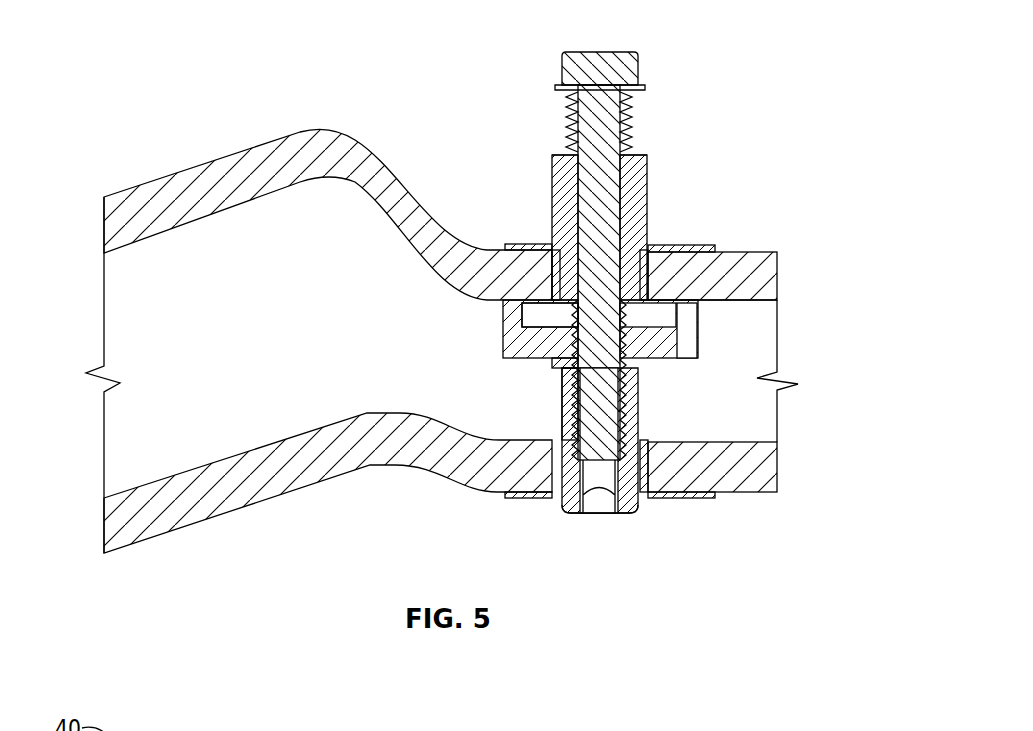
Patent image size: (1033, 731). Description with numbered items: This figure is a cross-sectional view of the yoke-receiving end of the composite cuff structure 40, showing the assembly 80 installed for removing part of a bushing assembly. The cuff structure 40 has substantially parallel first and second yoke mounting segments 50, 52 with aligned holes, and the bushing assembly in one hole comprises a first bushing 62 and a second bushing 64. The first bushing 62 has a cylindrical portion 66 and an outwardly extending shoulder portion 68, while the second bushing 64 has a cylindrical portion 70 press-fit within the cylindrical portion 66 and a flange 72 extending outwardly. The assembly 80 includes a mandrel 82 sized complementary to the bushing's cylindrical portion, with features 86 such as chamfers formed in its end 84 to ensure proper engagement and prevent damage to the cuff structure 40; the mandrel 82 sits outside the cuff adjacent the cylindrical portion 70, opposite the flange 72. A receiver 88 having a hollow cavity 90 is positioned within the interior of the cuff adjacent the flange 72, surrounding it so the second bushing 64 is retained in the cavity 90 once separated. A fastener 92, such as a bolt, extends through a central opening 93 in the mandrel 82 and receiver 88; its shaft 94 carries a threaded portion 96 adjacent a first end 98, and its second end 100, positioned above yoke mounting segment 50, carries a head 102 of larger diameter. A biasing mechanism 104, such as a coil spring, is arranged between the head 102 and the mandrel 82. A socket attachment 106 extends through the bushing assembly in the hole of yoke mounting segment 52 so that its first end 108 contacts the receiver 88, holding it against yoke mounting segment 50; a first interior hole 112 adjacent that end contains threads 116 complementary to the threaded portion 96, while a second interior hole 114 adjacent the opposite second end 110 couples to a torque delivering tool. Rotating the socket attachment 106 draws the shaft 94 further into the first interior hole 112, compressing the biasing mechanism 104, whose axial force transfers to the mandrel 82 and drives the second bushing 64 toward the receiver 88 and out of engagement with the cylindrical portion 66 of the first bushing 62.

The composite cuff structure 40 is at (108, 104).
The first yoke mounting segment 50 is at (385, 160).
The second yoke mounting segment 52 is at (346, 422).
The first bushing 62 is at (543, 240).
The second bushing 64 is at (668, 315).
The cylindrical portion of first bushing 66 is at (720, 303).
The shoulder portion of first bushing 68 is at (653, 243).
The cylindrical portion of second bushing 70 is at (550, 270).
The flange of second bushing 72 is at (526, 316).
The assembly for removing bushing 80 is at (708, 195).
The mandrel 82 is at (647, 183).
The end of mandrel 84 is at (540, 330).
The features 86 is at (686, 245).
The receiver 88 is at (700, 345).
The hollow cavity 90 is at (695, 362).
The fastener 92 is at (637, 130).
The central opening 93 is at (552, 198).
The shaft 94 is at (700, 288).
The threaded portion 96 is at (560, 366).
The first end of fastener 98 is at (632, 395).
The second end of fastener 100 is at (603, 52).
The head 102 is at (637, 72).
The biasing mechanism 104 is at (562, 110).
The socket attachment 106 is at (648, 503).
The first end of socket attachment 108 is at (560, 387).
The second end of socket attachment 110 is at (572, 515).
The first interior hole 112 is at (650, 470).
The second interior hole 114 is at (597, 493).
The threads 116 is at (548, 498).